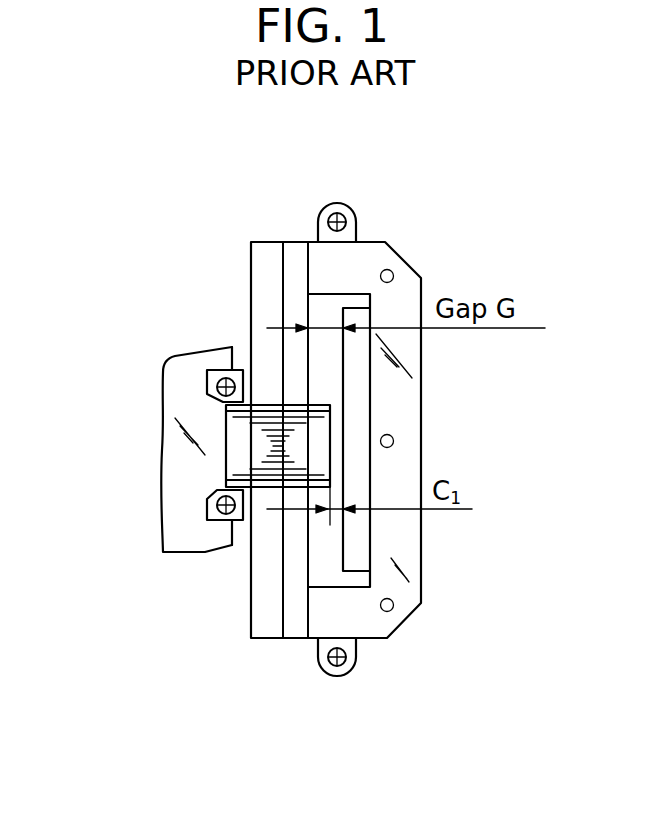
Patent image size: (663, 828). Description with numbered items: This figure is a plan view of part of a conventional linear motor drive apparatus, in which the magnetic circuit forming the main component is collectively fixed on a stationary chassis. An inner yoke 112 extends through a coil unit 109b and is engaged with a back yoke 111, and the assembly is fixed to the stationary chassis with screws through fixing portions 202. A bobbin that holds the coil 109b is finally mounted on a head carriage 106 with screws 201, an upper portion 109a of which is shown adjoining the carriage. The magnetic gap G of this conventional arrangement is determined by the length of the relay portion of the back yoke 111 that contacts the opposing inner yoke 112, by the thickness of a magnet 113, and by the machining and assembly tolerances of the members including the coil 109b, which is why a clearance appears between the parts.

The head carriage 106 is at (172, 502).
The upper arm of bracket 109a is at (223, 372).
The coil unit 109b is at (233, 460).
The back yoke 111 is at (405, 270).
The inner yoke 112 is at (260, 243).
The magnet 113 is at (360, 420).
The screws 201 is at (207, 380).
The fixing portions 202 is at (356, 214).